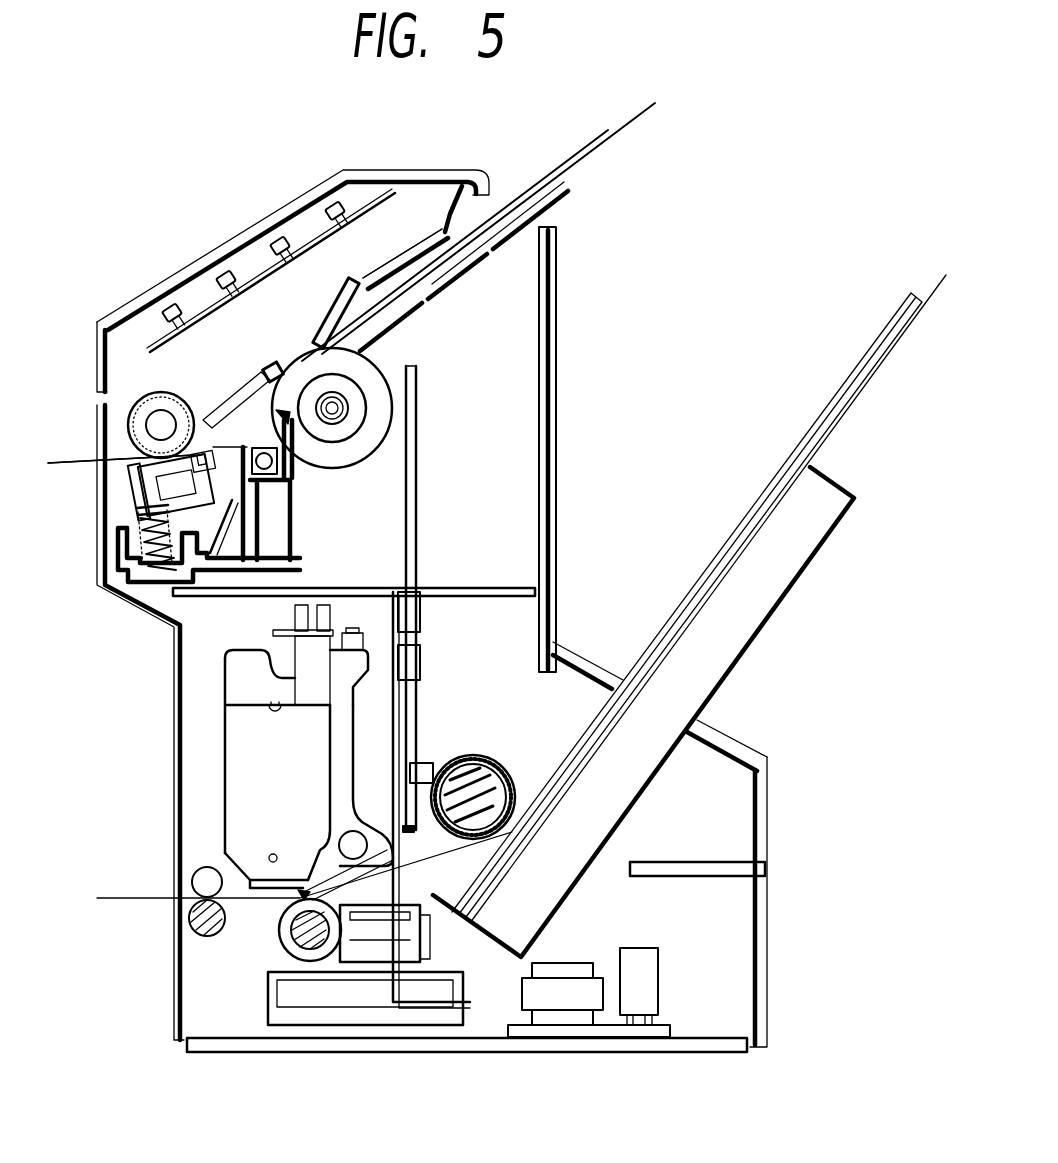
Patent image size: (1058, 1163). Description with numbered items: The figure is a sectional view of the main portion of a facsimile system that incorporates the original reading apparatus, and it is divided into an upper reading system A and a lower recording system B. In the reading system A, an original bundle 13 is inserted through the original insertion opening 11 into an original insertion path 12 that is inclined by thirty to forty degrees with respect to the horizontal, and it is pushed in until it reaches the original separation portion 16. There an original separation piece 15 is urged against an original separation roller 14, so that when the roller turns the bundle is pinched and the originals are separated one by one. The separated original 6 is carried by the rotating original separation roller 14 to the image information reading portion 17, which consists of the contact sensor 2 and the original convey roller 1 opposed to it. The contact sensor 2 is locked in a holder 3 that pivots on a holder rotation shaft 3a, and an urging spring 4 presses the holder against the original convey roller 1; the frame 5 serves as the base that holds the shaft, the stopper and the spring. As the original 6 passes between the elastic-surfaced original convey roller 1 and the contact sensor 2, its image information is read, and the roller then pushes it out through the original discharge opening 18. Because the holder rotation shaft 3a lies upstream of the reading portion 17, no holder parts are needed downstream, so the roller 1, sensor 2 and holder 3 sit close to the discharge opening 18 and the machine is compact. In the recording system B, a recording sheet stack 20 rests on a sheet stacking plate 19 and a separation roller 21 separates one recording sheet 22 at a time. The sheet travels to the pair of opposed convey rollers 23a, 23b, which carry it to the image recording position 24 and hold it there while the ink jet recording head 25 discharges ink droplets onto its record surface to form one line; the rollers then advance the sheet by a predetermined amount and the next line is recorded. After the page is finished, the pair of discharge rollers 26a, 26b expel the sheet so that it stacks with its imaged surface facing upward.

The original convey roller 1 is at (172, 392).
The contact sensor (CS) 2 is at (140, 497).
The holder 3 is at (250, 505).
The holder rotation shaft 3a is at (275, 473).
The urging spring 4 is at (143, 543).
The frame 5 is at (250, 540).
The original 6 is at (252, 420).
The original insertion opening 11 is at (508, 180).
The original insertion path 12 is at (440, 272).
The original bundle 13 is at (600, 152).
The original separation roller 14 is at (375, 375).
The original separation piece 15 is at (318, 318).
The original separation portion 16 is at (280, 358).
The image information reading portion 17 is at (148, 470).
The original discharge opening 18 is at (97, 453).
The sheet stacking plate 19 is at (810, 537).
The recording sheet stack 20 is at (842, 390).
The separation roller 21 is at (490, 755).
The recording sheet 22 is at (127, 898).
The convey roller 23a is at (312, 950).
The convey roller 23b is at (303, 892).
The image recording position 24 is at (270, 905).
The ink jet recording head 25 is at (272, 888).
The discharge roller 26a is at (207, 933).
The discharge roller 26b is at (207, 877).
The reading system A is at (213, 318).
The recording system B is at (255, 752).